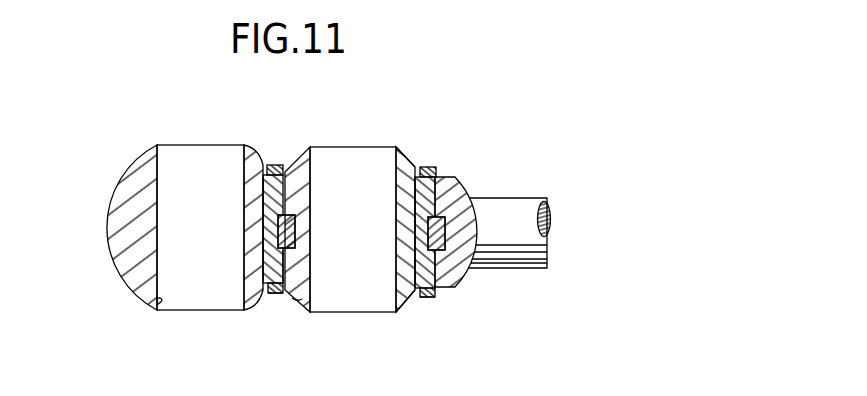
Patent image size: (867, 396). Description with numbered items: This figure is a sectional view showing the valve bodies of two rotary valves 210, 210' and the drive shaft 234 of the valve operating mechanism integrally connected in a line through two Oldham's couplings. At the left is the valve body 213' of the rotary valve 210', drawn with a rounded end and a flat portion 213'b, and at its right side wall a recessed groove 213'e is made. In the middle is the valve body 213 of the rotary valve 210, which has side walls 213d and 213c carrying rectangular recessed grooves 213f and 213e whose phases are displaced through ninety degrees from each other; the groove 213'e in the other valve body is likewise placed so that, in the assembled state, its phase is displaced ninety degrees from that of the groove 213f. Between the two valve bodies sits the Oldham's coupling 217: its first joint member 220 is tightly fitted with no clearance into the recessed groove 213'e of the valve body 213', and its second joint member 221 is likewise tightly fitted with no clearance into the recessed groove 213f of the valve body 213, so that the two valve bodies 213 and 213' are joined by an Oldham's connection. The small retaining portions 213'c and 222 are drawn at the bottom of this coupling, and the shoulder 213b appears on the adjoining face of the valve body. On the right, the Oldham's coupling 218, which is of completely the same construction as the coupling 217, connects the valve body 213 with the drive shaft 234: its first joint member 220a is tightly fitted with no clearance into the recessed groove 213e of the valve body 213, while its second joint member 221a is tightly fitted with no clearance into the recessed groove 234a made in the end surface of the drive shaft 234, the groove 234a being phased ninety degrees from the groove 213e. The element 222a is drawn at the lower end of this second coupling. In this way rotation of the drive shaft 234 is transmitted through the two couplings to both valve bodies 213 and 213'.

The valve body 213' is at (112, 225).
The rotary valve 210' is at (200, 198).
The shoulder of first member 213'b is at (117, 314).
The first joint member 220 is at (267, 168).
The Oldham's coupling 217 is at (280, 163).
The Oldham's coupling 218 is at (430, 167).
The recessed groove 213'e is at (223, 229).
The side wall 213d is at (280, 260).
The recessed groove 213f is at (291, 230).
The second joint member 221 is at (296, 160).
The retaining ring 222 is at (280, 294).
The groove 213'c is at (244, 320).
The shoulder 213b is at (297, 300).
The rotary valve 210 is at (353, 210).
The valve body 213 is at (407, 265).
The side wall 213c is at (401, 250).
The first joint member 220a is at (422, 165).
The recessed groove 213e is at (418, 205).
The second joint member 221a is at (450, 268).
The retaining ring 222a is at (432, 297).
The recessed groove 234a is at (441, 227).
The drive shaft 234 is at (506, 208).